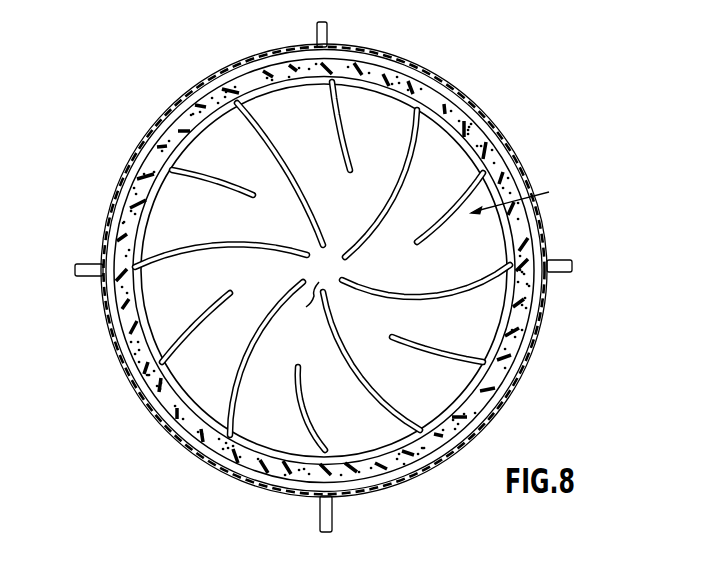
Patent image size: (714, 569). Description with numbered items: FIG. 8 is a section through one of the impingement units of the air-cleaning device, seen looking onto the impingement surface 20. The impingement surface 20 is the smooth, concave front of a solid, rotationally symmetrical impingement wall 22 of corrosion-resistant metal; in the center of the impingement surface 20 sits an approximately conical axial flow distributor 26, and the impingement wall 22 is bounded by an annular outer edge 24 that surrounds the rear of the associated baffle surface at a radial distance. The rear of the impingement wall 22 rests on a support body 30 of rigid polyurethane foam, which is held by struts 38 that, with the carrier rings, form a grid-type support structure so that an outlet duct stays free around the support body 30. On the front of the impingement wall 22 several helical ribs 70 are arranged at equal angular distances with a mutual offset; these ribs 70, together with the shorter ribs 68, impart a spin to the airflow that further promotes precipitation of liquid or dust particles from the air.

The impingement surface 20 is at (444, 195).
The impingement wall 22 is at (523, 192).
The annular outer edge 24 is at (470, 132).
The axial flow distributor 26 is at (304, 311).
The support body 30 is at (440, 93).
The struts 38 is at (327, 27).
The short vanes 68 is at (423, 355).
The helical ribs 70 is at (440, 293).